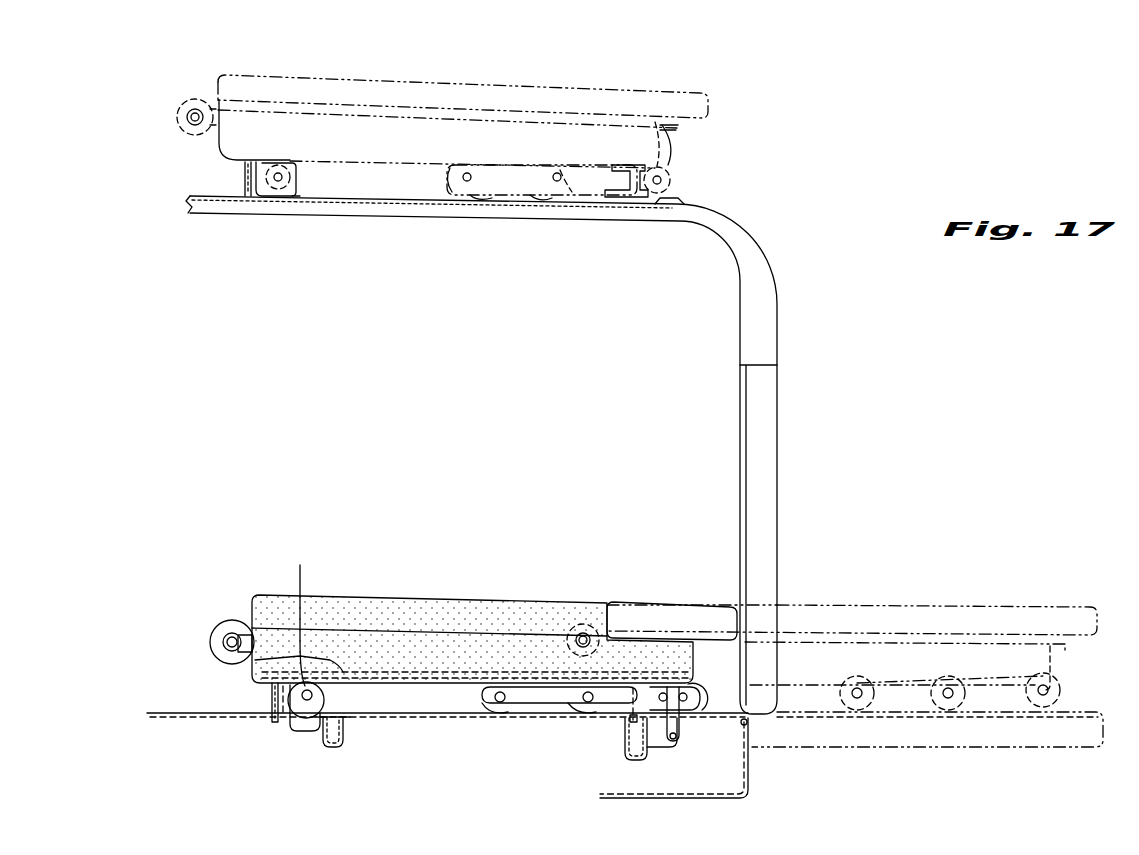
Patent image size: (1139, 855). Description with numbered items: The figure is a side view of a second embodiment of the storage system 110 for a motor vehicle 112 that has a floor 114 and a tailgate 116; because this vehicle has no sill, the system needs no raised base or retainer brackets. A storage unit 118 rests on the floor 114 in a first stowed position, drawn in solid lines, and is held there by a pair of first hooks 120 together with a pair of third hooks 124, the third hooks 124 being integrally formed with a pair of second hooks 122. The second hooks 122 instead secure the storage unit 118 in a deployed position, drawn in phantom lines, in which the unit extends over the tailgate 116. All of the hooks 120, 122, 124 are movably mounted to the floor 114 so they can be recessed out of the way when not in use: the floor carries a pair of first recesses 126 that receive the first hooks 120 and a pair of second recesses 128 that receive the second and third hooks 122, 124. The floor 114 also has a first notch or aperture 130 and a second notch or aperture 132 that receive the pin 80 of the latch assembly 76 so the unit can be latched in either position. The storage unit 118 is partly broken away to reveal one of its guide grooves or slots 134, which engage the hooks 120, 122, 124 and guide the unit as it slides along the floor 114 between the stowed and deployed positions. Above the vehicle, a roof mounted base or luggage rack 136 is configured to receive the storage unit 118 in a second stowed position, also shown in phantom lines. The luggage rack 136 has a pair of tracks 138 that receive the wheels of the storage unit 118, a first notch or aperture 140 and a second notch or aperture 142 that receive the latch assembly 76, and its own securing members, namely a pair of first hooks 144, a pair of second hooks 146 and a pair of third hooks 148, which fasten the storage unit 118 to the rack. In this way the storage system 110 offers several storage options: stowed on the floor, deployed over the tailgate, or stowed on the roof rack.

The latch assembly 76 is at (272, 721).
The pin 80 is at (268, 704).
The storage system 110 is at (722, 107).
The motor vehicle 112 is at (756, 798).
The floor 114 is at (172, 712).
The tailgate 116 is at (778, 418).
The storage unit 118 is at (568, 606).
The first hooks 120 is at (318, 732).
The second hooks 122 is at (651, 704).
The third hooks 124 is at (697, 713).
The first recesses 126 is at (346, 733).
The second recesses 128 is at (630, 758).
The first notch or aperture 130 is at (277, 722).
The second notch or aperture 132 is at (628, 720).
The guide grooves or slots 134 is at (302, 612).
The luggage rack 136 is at (678, 196).
The tracks 138 is at (517, 195).
The first notch or aperture 140 is at (244, 190).
The second notch or aperture 142 is at (603, 192).
The first hooks 144 is at (290, 160).
The second hooks 146 is at (620, 167).
The third hooks 148 is at (673, 125).